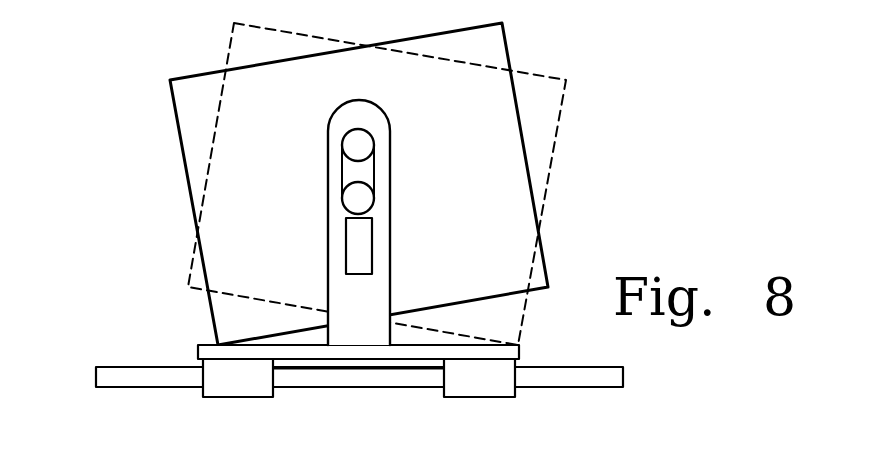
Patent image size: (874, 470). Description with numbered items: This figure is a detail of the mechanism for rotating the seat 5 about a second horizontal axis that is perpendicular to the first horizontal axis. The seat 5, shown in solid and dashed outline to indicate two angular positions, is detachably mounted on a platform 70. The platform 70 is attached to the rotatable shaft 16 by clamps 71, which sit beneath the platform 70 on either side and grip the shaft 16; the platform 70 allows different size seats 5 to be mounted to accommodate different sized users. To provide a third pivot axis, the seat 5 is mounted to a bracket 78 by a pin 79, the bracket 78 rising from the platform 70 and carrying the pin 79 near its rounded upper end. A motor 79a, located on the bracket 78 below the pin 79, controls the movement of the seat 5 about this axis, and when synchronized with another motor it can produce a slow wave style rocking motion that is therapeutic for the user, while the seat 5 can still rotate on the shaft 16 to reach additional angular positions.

The seat 5 is at (197, 113).
The rotatable shaft 16 is at (115, 377).
The platform 70 is at (207, 345).
The clamps 71 is at (235, 385).
The bracket 78 is at (328, 250).
The pin 79 is at (358, 143).
The motor 79a is at (360, 243).